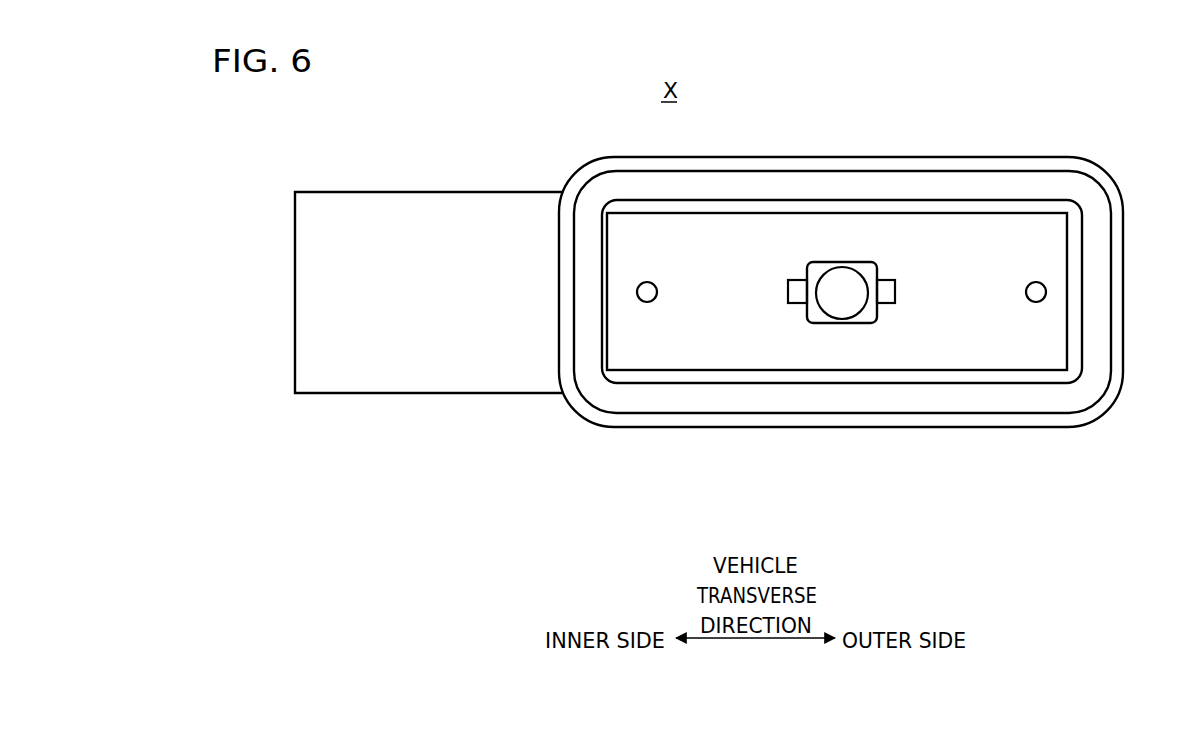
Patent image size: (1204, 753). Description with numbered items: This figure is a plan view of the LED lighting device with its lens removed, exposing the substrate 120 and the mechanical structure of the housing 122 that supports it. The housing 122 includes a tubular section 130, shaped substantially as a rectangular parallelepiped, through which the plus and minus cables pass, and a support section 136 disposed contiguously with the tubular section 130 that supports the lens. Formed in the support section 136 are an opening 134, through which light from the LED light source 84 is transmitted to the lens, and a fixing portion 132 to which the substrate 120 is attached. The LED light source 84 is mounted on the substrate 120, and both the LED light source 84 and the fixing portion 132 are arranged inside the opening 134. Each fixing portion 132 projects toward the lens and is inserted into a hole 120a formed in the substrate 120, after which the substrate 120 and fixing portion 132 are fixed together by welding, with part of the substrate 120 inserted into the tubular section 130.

The LED light source 84 is at (840, 278).
The substrate 120 is at (871, 318).
The hole 120a is at (841, 302).
The housing 122 is at (739, 341).
The tubular section 130 is at (395, 394).
The fixing portion 132 is at (646, 301).
The opening 134 is at (813, 202).
The support section 136 is at (862, 421).